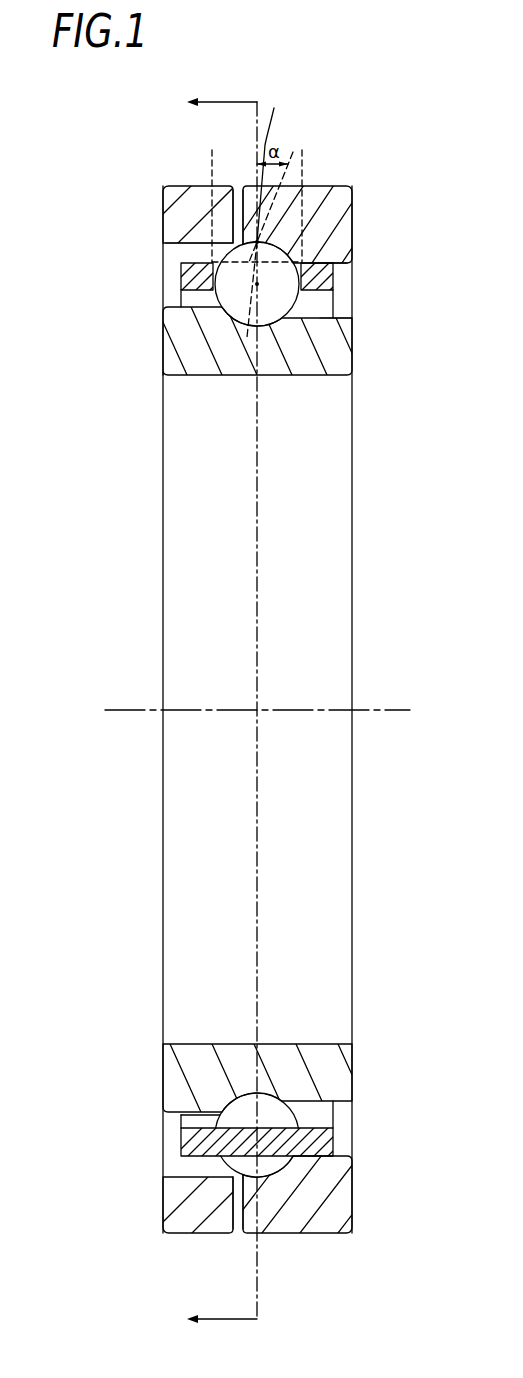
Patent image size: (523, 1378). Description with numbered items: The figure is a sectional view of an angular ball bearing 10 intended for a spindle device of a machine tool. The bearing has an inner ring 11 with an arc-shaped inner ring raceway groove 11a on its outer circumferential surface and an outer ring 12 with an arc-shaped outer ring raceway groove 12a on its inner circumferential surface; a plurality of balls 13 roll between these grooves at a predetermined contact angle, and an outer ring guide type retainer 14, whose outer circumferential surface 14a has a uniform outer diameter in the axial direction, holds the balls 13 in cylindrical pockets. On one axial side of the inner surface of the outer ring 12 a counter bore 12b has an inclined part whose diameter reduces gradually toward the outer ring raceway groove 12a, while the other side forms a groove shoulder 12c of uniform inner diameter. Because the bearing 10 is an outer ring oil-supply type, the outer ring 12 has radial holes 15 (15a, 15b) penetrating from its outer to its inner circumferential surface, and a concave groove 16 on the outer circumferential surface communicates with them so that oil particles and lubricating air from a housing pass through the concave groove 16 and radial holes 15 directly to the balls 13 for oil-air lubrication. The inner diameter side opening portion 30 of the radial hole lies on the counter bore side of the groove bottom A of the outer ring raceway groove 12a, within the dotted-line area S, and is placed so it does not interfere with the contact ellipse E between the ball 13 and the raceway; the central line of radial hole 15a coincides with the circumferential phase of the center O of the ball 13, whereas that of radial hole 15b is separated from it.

The angular ball bearing 10 is at (332, 184).
The inner ring 11 is at (175, 348).
The inner ring raceway groove 11a is at (340, 317).
The outer ring 12 is at (178, 212).
The outer ring raceway groove 12a is at (336, 265).
The counter bore 12b is at (175, 237).
The groove shoulder 12c is at (320, 253).
The ball 13 is at (233, 305).
The retainer 14 is at (213, 711).
The outer circumferential surface of the retainer 14a is at (188, 1165).
The radial hole 15 is at (186, 713).
The radial hole 15a is at (165, 191).
The radial hole 15b is at (232, 1222).
The concave groove 16 is at (237, 185).
The inner diameter side opening portion 30 is at (195, 259).
The groove bottom A is at (263, 211).
The area S is at (302, 162).
The contact ellipse E is at (277, 272).
The center of the ball O is at (257, 284).